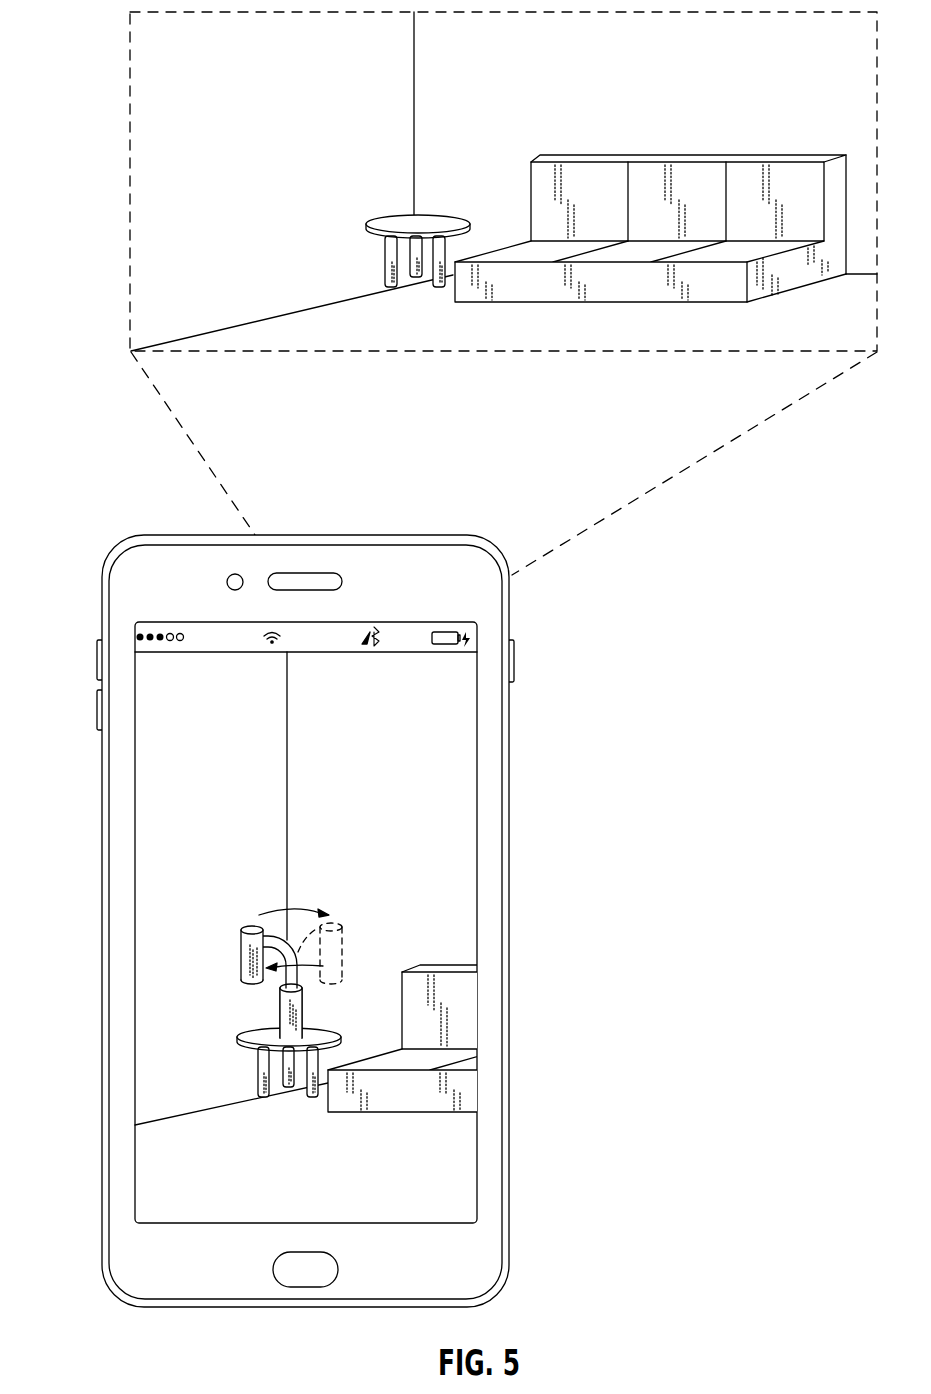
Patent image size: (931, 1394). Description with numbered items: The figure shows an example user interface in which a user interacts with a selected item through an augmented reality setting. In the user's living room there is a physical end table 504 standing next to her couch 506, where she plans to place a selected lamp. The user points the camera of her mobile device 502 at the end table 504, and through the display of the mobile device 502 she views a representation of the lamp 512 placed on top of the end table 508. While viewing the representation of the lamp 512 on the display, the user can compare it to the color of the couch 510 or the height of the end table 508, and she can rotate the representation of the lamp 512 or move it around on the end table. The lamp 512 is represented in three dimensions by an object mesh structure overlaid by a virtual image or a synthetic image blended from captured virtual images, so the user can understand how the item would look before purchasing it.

The mobile device 502 is at (112, 552).
The end table 504 is at (365, 230).
The couch 506 is at (683, 153).
The end table 508 is at (257, 1070).
The couch 510 is at (413, 970).
The representation of the lamp 512 is at (248, 928).